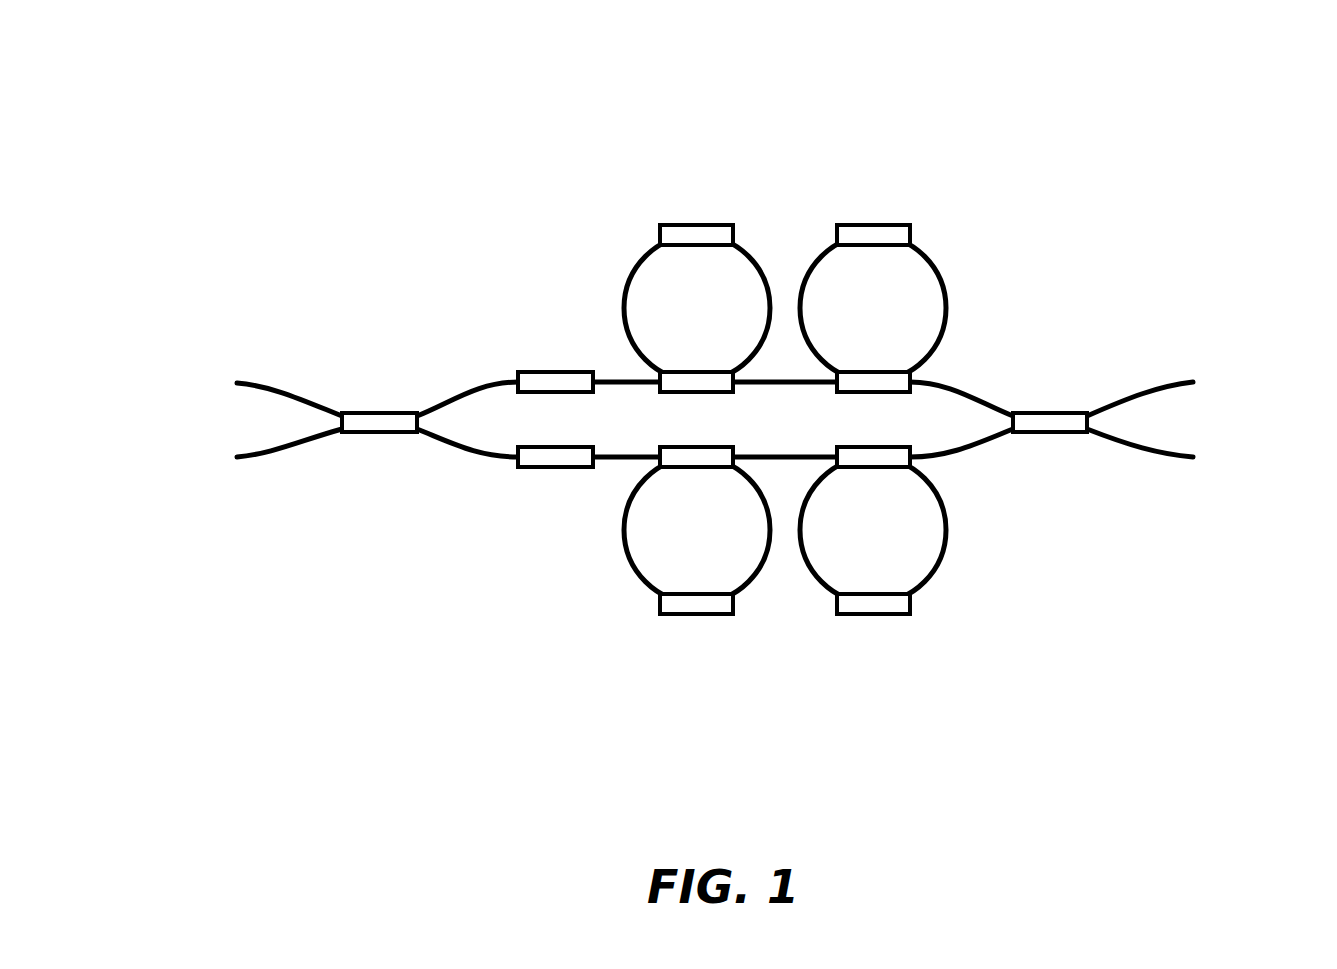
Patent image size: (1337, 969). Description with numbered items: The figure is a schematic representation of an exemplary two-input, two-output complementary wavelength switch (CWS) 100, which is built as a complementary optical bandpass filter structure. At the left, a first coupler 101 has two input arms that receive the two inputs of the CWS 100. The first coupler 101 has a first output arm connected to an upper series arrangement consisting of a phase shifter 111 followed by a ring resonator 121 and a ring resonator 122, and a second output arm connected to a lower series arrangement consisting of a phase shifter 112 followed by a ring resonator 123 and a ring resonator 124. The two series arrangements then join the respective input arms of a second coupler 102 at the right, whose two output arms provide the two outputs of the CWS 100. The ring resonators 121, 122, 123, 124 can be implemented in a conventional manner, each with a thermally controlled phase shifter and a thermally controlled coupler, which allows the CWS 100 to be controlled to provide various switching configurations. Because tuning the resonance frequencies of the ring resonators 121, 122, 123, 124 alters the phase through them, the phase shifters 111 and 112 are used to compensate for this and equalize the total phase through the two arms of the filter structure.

The complementary wavelength switch 100 is at (687, 63).
The first coupler 101 is at (373, 434).
The second coupler 102 is at (1047, 434).
The phase shifter 111 is at (553, 371).
The phase shifter 112 is at (553, 469).
The ring resonator 121 is at (697, 308).
The ring resonator 122 is at (873, 308).
The ring resonator 123 is at (697, 530).
The ring resonator 124 is at (873, 530).